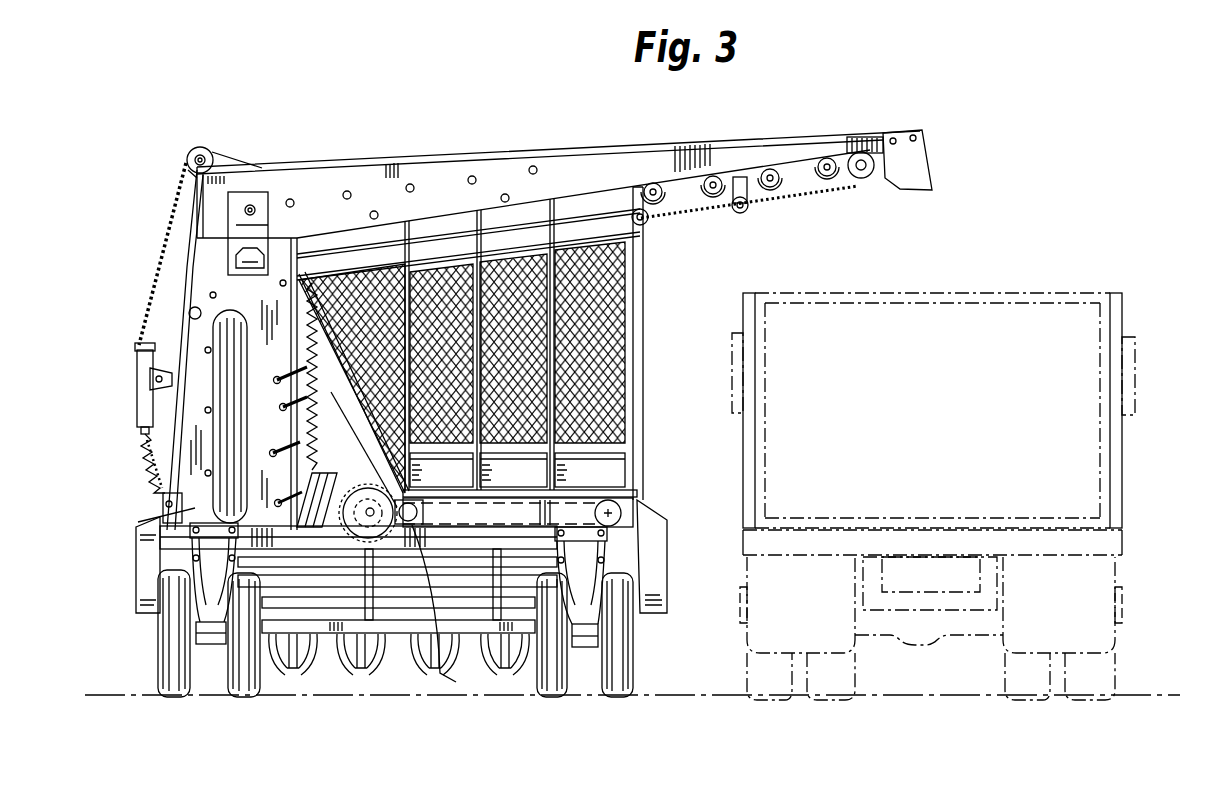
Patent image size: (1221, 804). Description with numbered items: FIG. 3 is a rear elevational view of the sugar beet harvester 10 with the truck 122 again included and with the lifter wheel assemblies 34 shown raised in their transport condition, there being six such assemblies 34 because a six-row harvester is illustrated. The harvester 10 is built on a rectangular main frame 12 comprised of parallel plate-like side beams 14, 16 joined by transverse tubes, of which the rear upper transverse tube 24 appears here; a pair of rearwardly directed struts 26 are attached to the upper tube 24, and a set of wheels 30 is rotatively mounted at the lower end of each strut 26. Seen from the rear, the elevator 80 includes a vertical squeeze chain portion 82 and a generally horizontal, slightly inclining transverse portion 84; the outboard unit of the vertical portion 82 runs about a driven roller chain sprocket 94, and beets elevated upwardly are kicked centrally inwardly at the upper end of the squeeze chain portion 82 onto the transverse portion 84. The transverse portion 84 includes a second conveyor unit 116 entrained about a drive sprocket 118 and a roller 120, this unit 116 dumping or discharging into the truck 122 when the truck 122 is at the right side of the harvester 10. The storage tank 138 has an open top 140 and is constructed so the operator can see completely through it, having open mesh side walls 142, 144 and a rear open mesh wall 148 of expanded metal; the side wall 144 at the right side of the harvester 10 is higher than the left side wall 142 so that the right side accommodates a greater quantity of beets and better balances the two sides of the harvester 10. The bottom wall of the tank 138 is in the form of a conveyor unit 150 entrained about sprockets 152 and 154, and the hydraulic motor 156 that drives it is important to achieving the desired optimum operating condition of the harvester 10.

The sugar beet harvester 10 is at (150, 145).
The main frame 12 is at (126, 575).
The side beam 14 is at (135, 540).
The side beam 16 is at (670, 528).
The rear upper transverse tube 24 is at (270, 543).
The strut 26 is at (197, 560).
The wheels 30 is at (243, 698).
The lifter wheel assembly 34 is at (363, 673).
The elevator 80 is at (128, 312).
The vertical squeeze chain portion 82 is at (147, 254).
The transverse portion 84 is at (695, 218).
The driven roller chain sprocket 94 is at (196, 146).
The second conveyor unit 116 is at (814, 202).
The drive sprocket 118 is at (533, 210).
The roller 120 is at (877, 166).
The truck 122 is at (1122, 435).
The storage tank 138 is at (626, 333).
The open top 140 is at (360, 272).
The open mesh side wall 142 is at (331, 392).
The open mesh side wall 144 is at (628, 364).
The rear open mesh wall 148 is at (514, 310).
The conveyor unit 150 is at (556, 497).
The sprocket 152 is at (373, 538).
The sprocket 154 is at (624, 512).
The hydraulic motor 156 is at (443, 600).